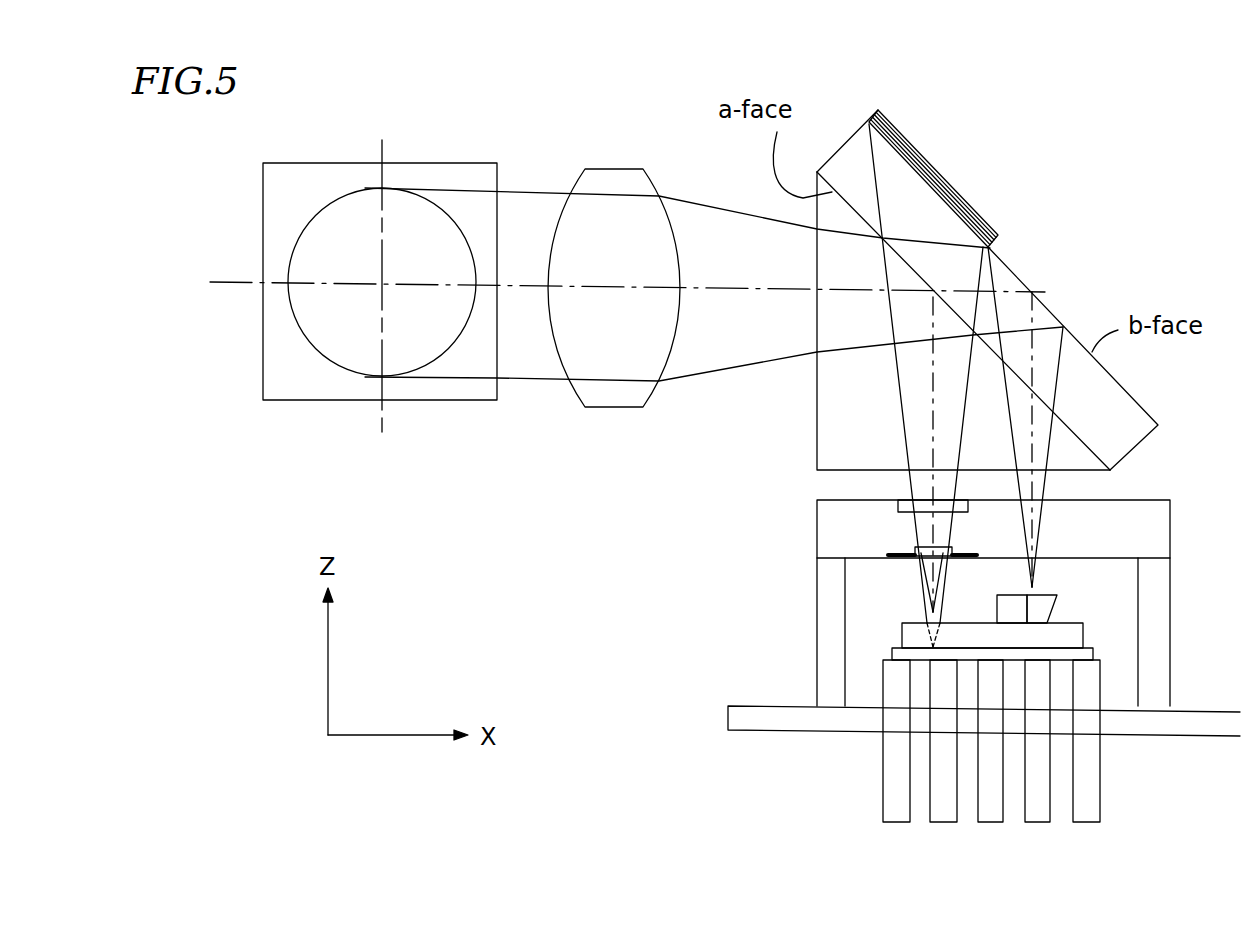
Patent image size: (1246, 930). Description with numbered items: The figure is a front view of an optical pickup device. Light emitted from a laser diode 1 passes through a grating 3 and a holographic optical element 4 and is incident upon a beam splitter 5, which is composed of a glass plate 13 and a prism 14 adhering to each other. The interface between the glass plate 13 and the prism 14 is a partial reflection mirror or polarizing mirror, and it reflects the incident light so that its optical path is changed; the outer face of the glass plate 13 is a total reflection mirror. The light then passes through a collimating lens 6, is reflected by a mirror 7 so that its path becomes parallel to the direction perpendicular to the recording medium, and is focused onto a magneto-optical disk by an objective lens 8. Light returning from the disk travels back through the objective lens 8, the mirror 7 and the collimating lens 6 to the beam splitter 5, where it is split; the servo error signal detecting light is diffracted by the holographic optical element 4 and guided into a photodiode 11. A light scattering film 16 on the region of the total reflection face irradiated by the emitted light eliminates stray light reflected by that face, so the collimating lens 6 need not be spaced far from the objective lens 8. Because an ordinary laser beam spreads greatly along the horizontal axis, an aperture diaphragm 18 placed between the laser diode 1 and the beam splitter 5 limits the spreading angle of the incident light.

The laser diode 1 is at (928, 655).
The grating 3 is at (913, 561).
The holographic optical element 4 is at (898, 502).
The beam splitter 5 is at (840, 158).
The collimating lens 6 is at (643, 169).
The mirror 7 is at (290, 400).
The objective lens 8 is at (330, 203).
The photodiode 11 is at (1068, 637).
The glass plate 13 is at (1135, 413).
The prism 14 is at (832, 423).
The light scattering film 16 is at (928, 158).
The aperture diaphragm 18 is at (905, 556).